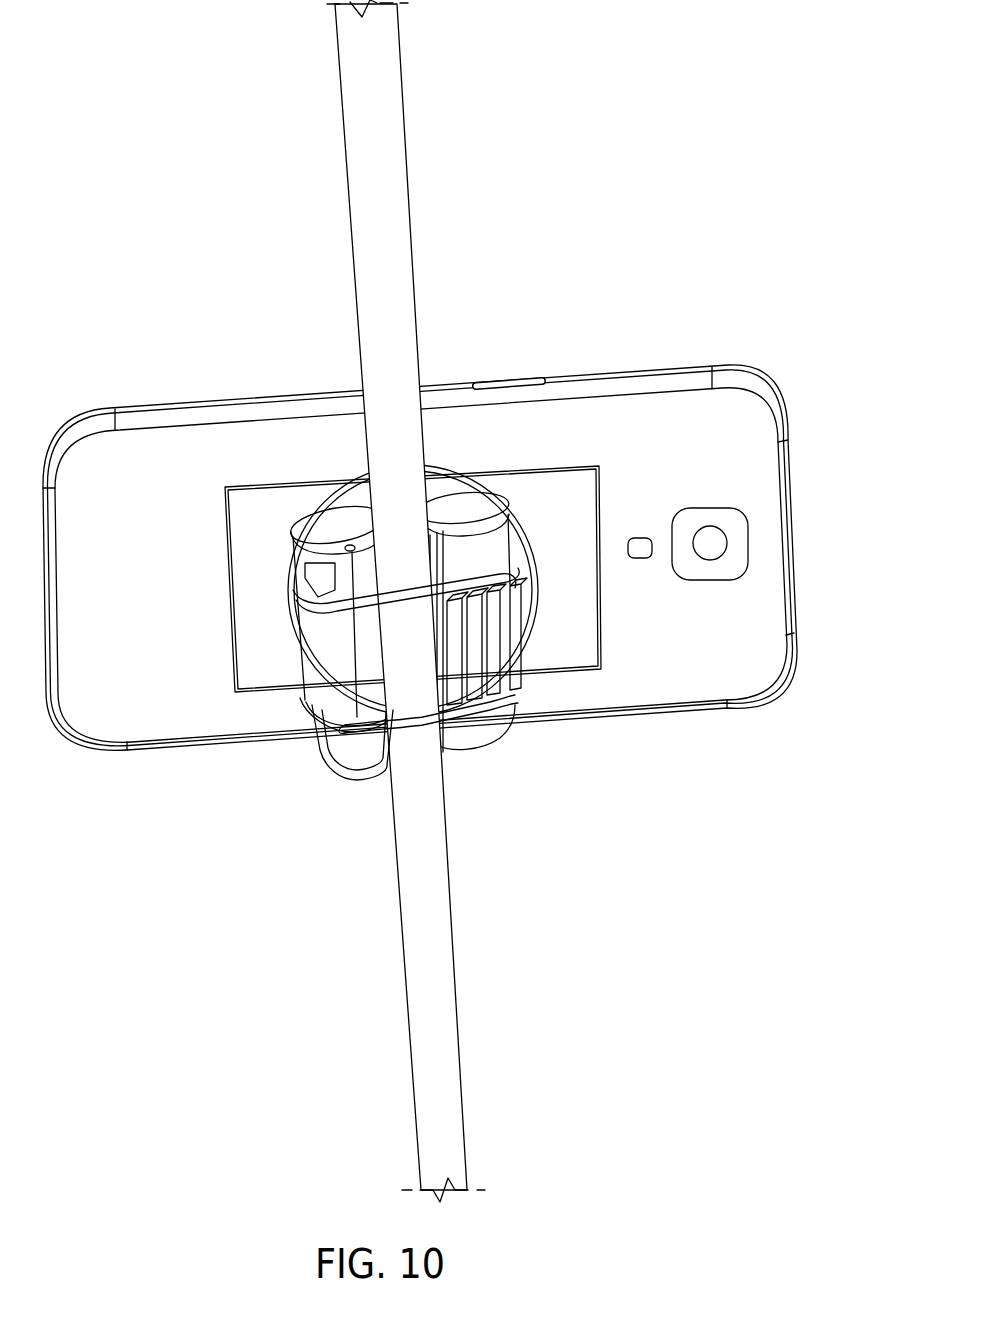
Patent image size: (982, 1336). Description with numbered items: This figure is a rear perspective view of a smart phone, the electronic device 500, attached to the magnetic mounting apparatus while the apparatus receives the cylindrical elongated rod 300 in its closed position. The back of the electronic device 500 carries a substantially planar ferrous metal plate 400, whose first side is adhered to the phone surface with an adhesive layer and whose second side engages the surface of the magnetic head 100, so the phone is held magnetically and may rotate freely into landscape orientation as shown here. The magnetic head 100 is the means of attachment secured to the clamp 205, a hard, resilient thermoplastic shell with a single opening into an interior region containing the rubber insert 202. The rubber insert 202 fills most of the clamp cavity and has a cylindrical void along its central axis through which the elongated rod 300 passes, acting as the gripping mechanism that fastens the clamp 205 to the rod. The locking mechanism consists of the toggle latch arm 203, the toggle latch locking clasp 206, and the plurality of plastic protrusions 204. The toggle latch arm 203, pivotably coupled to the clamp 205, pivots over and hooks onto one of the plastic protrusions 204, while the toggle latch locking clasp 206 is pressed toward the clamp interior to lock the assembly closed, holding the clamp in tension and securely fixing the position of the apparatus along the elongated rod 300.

The magnetic head 100 is at (417, 601).
The rubber insert 202 is at (453, 497).
The toggle latch arm 203 is at (417, 728).
The plurality of plastic protrusions 204 is at (477, 653).
The clamp 205 is at (357, 768).
The toggle latch locking clasp 206 is at (312, 695).
The elongated rod 300 is at (467, 1028).
The ferrous metal plate 400 is at (573, 613).
The electronic device 500 is at (766, 718).